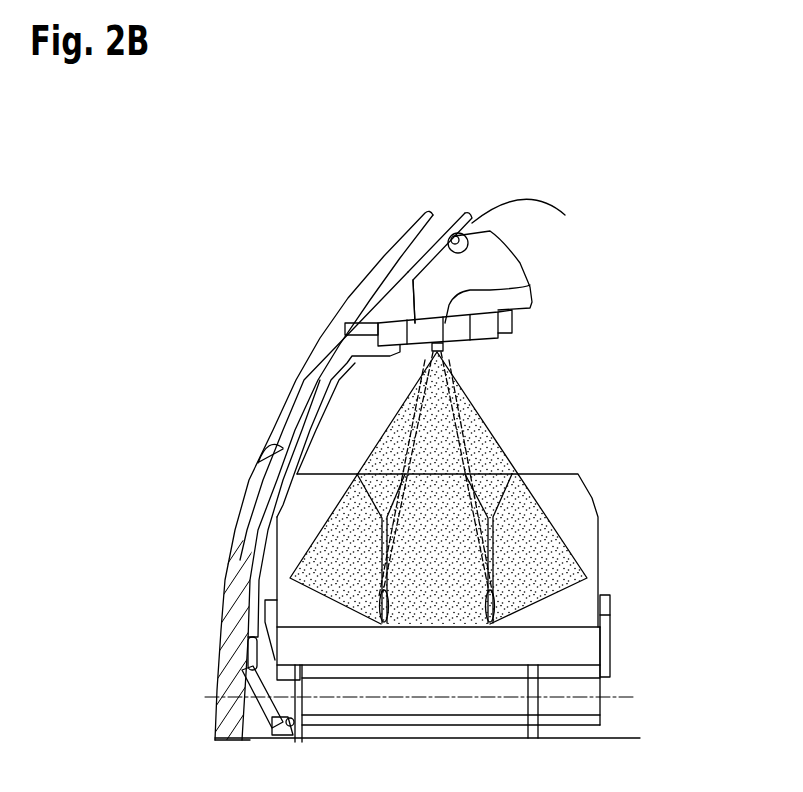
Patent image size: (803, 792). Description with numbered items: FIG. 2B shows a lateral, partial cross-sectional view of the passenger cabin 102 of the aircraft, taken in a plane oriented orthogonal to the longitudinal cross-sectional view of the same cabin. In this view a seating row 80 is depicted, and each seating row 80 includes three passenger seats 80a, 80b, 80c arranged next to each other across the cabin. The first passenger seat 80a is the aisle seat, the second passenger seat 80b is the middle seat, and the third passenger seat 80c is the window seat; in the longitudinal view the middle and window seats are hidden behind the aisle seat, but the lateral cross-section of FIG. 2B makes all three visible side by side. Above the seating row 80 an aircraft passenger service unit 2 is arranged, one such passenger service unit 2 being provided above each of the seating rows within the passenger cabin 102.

The passenger cabin 102 is at (241, 233).
The aircraft passenger service unit 2 is at (530, 287).
The seating row 80 is at (458, 565).
The first passenger seat 80a is at (605, 463).
The second passenger seat 80b is at (422, 703).
The third passenger seat 80c is at (337, 470).